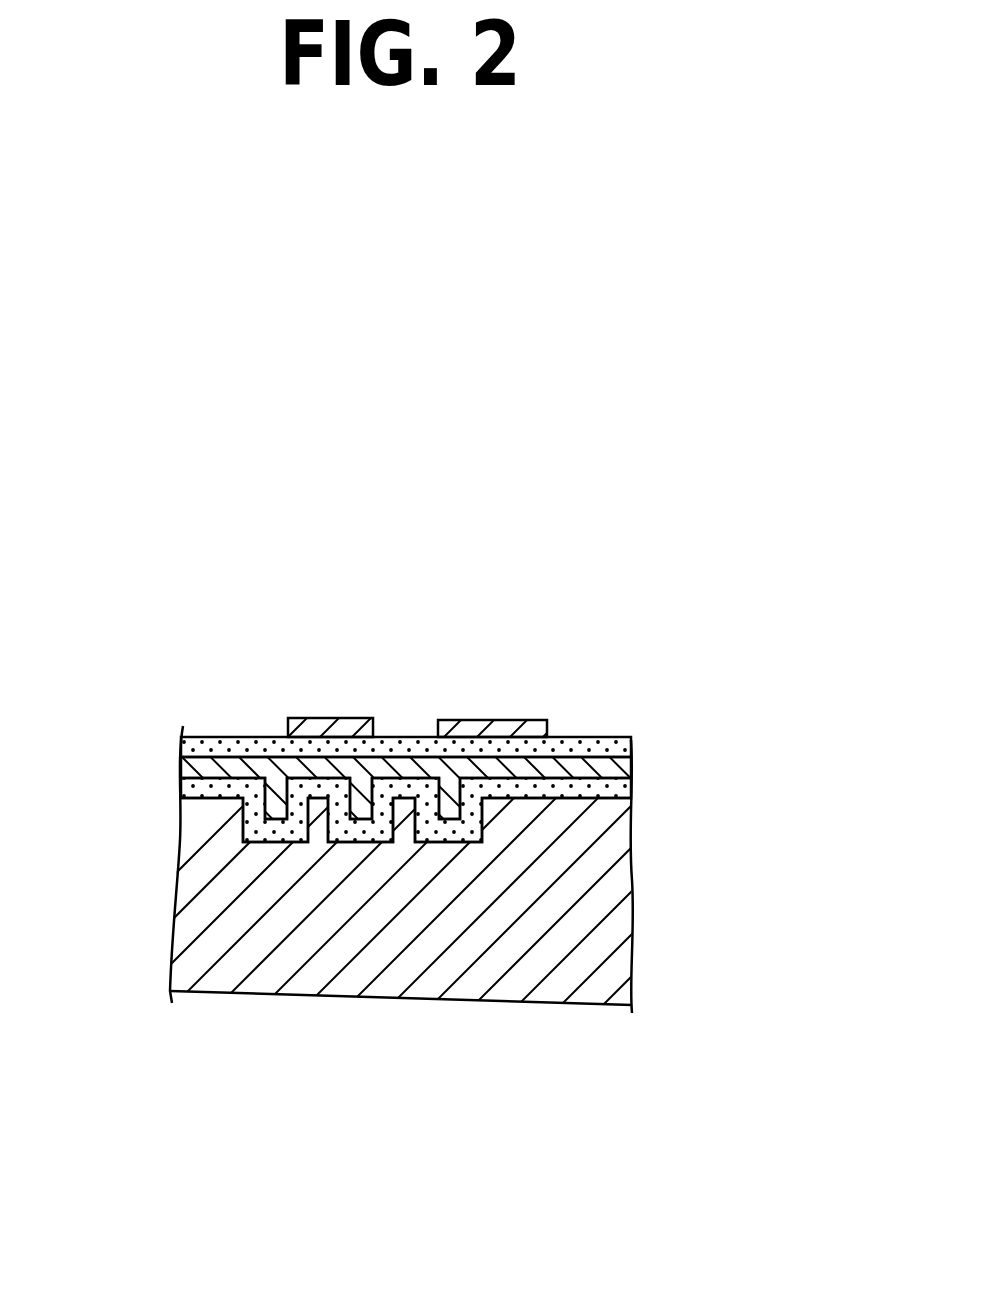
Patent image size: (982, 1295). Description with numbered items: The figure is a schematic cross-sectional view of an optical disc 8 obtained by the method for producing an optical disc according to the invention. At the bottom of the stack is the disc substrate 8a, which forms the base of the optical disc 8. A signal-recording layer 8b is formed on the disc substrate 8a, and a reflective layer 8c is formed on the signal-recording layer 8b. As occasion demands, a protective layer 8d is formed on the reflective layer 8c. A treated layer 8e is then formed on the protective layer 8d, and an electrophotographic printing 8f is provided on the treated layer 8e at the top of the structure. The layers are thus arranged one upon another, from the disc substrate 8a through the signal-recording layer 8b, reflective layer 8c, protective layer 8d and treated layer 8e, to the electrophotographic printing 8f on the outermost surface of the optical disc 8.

The optical disc 8 is at (505, 560).
The disc substrate 8a is at (620, 927).
The signal-recording layer 8b is at (203, 891).
The reflective layer 8c is at (635, 808).
The protective layer 8d is at (635, 773).
The treated layer 8e is at (635, 752).
The electrophotographic printing 8f is at (523, 723).